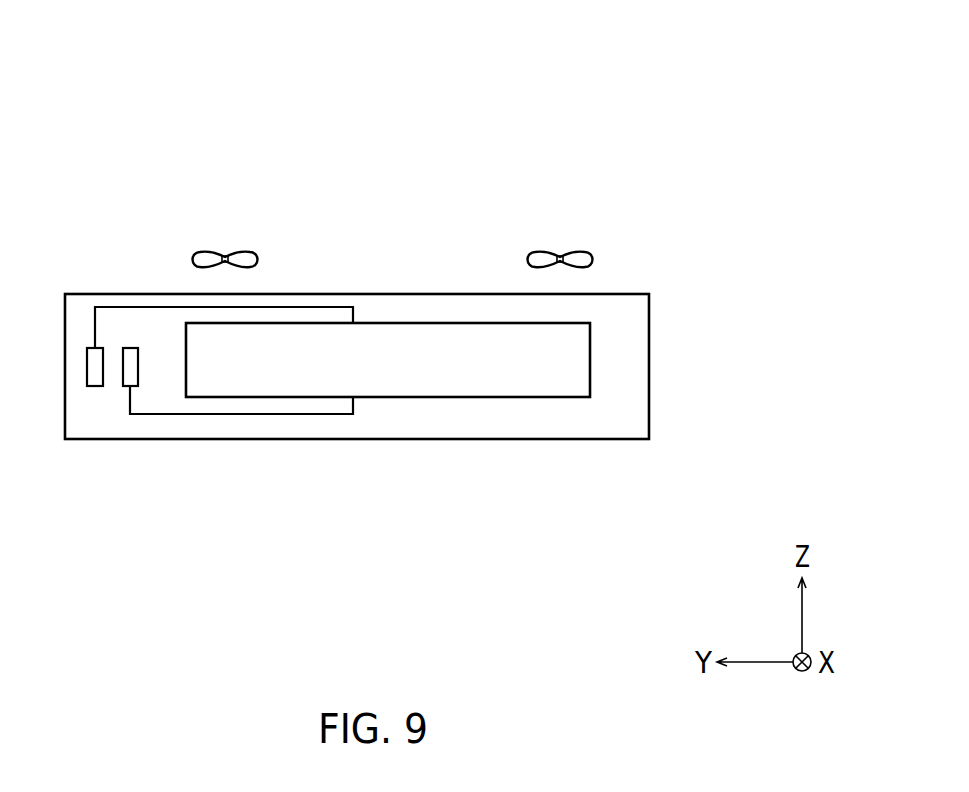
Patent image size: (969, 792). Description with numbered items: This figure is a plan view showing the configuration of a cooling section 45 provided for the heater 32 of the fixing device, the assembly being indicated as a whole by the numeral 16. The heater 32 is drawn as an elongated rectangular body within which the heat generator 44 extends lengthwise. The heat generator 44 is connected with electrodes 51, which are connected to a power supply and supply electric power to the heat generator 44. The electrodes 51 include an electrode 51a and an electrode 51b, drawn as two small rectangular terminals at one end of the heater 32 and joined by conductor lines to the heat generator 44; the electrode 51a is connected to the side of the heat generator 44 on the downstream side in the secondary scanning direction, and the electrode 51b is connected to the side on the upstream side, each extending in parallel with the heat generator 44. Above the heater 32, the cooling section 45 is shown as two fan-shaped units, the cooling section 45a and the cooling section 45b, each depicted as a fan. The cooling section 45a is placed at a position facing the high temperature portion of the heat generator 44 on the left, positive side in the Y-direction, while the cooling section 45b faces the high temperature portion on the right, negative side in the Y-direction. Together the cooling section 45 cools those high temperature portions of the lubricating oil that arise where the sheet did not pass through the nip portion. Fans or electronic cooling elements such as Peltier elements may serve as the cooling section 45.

The antenna module 16 is at (103, 283).
The heater 32 is at (649, 317).
The heat generator 44 is at (417, 387).
The cooling section 45 is at (458, 148).
The cooling section 45a is at (252, 250).
The cooling section 45b is at (533, 252).
The electrodes 51 is at (220, 436).
The electrode 51a is at (158, 307).
The electrode 51b is at (197, 414).